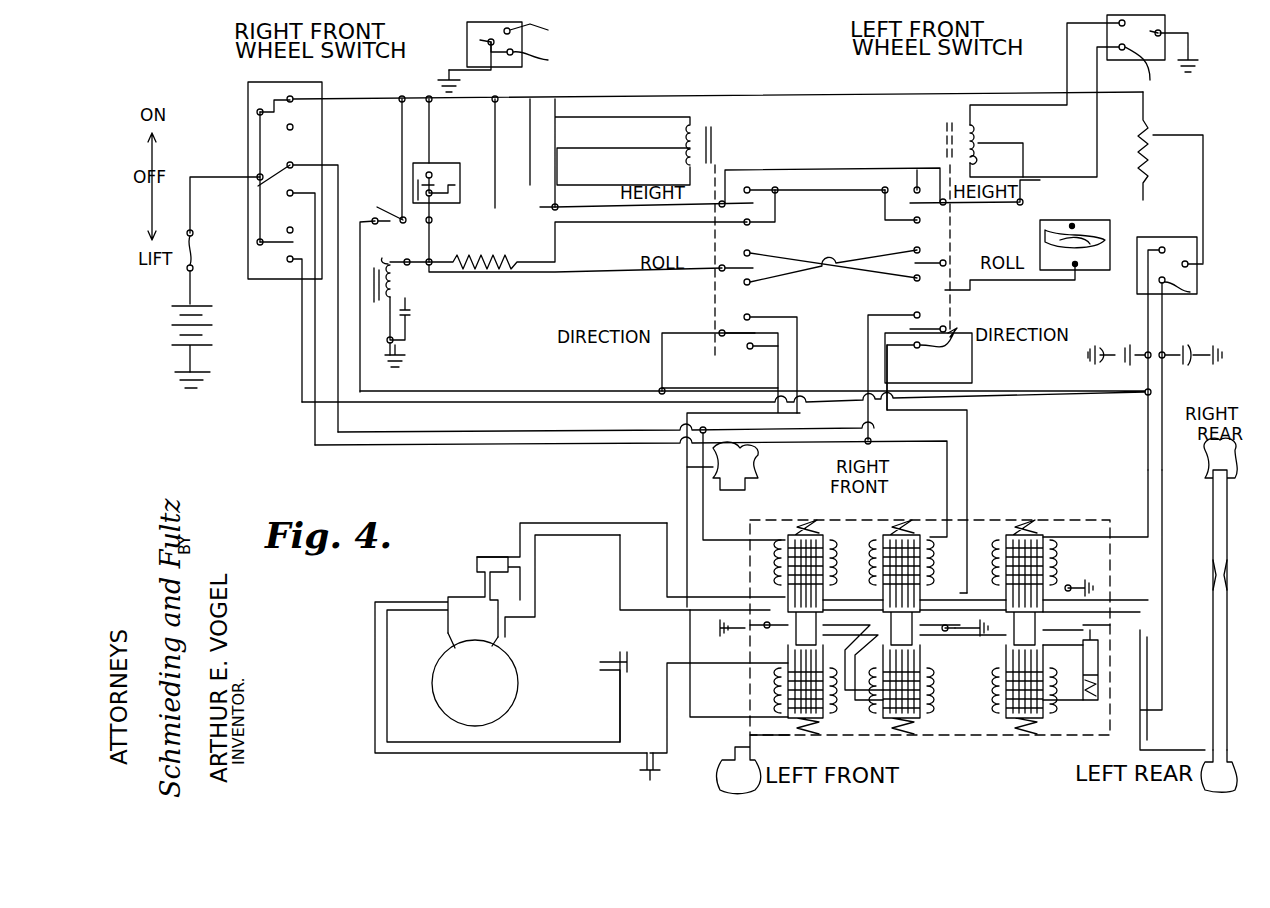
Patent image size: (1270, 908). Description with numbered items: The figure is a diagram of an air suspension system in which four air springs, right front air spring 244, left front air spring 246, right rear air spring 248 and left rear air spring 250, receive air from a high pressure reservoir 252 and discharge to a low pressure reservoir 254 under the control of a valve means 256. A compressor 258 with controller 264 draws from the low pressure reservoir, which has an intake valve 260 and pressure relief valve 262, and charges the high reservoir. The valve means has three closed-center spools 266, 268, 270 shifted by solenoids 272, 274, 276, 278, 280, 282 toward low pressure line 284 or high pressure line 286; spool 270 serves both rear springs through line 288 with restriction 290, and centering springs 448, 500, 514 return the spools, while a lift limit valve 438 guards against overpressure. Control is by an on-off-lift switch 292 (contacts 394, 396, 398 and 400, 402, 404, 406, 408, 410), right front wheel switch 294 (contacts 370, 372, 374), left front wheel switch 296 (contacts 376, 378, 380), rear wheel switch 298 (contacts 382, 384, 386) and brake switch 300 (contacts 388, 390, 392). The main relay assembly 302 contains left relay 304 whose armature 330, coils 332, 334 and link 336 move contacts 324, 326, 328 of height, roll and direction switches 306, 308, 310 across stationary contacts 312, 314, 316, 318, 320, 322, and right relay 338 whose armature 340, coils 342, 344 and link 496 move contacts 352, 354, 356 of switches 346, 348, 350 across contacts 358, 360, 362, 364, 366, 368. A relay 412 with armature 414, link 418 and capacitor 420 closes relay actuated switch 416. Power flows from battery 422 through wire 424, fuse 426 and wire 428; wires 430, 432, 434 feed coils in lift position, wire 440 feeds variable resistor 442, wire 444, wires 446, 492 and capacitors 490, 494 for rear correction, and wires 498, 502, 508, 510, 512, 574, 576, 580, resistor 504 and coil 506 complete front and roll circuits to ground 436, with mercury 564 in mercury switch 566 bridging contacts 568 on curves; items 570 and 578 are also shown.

The right front air spring 244 is at (683, 468).
The left front air spring 246 is at (725, 780).
The right rear air spring 248 is at (1225, 470).
The left rear air spring 250 is at (1232, 755).
The high pressure reservoir 252 is at (580, 523).
The low pressure reservoir 254 is at (640, 705).
The valve means 256 is at (1046, 508).
The compressor 258 is at (420, 668).
The intake valve 260 is at (608, 675).
The pressure relief valve 262 is at (647, 765).
The controller 264 is at (477, 565).
The spool 266 is at (845, 533).
The spool 268 is at (963, 525).
The spool 270 is at (1047, 540).
The solenoid coil 272 is at (785, 545).
The solenoid coil 274 is at (760, 705).
The solenoid coil 276 is at (870, 545).
The solenoid coil 278 is at (940, 660).
The solenoid coil 280 is at (1060, 530).
The solenoid coil 282 is at (1005, 715).
The low pressure return line 284 is at (722, 663).
The high pressure line 286 is at (708, 595).
The rear line 288 is at (1128, 615).
The restriction 290 is at (1228, 588).
The on-off-lift switch 292 is at (238, 93).
The right front wheel switch 294 is at (457, 36).
The left front wheel switch 296 is at (1170, 26).
The rear wheel switch 298 is at (1208, 283).
The hydraulic brake switch 300 is at (436, 156).
The main relay assembly 302 is at (920, 90).
The left relay 304 is at (932, 121).
The left height switch 306 is at (868, 199).
The left roll switch 308 is at (955, 274).
The left direction switch 310 is at (960, 335).
The stationary contact 312 is at (915, 188).
The stationary contact 314 is at (917, 225).
The stationary contact 316 is at (832, 260).
The stationary contact 318 is at (912, 289).
The stationary contact 320 is at (890, 315).
The stationary contact 322 is at (895, 343).
The movable contact 324 is at (945, 220).
The movable contact 326 is at (950, 285).
The movable contact 328 is at (928, 358).
The armature 330 is at (935, 148).
The upper coil 332 is at (980, 130).
The lower coil 334 is at (978, 156).
The actuating link 336 is at (950, 250).
The right relay 338 is at (735, 105).
The armature 340 is at (745, 148).
The upper coil 342 is at (680, 135).
The lower coil 344 is at (680, 165).
The right height switch 346 is at (790, 217).
The right roll switch 348 is at (706, 280).
The right direction switch 350 is at (704, 332).
The movable contact 352 is at (720, 211).
The movable contact 354 is at (720, 288).
The movable contact 356 is at (740, 340).
The stationary contact 358 is at (750, 190).
The stationary contact 360 is at (744, 224).
The stationary contact 362 is at (745, 250).
The stationary contact 364 is at (819, 297).
The stationary contact 366 is at (750, 310).
The stationary contact 368 is at (752, 356).
The movable contact 370 is at (470, 70).
The upper stationary contact 372 is at (548, 30).
The lower stationary contact 374 is at (548, 60).
The movable contact 376 is at (1148, 80).
The upper stationary contact 378 is at (1118, 23).
The lower stationary contact 380 is at (1138, 45).
The movable contact 382 is at (1190, 292).
The upper stationary contact 384 is at (1175, 245).
The lower stationary contact 386 is at (1165, 315).
The movable contact 388 is at (455, 192).
The stationary contact 390 is at (435, 173).
The stationary contact 392 is at (436, 222).
The movable contact 394 is at (258, 103).
The movable contact 396 is at (258, 192).
The movable contact 398 is at (285, 270).
The stationary contact 400 is at (297, 97).
The stationary contact 402 is at (295, 127).
The stationary contact 404 is at (295, 163).
The stationary contact 406 is at (295, 192).
The stationary contact 408 is at (288, 232).
The stationary contact 410 is at (268, 252).
The relay 412 is at (410, 300).
The armature 414 is at (375, 290).
The relay actuated switch 416 is at (390, 212).
The actuator link 418 is at (382, 265).
The capacitor 420 is at (413, 335).
The battery 422 is at (182, 326).
The wire 424 is at (190, 290).
The fuse 426 is at (193, 252).
The wire 428 is at (205, 177).
The wire 430 is at (415, 412).
The wire 432 is at (332, 440).
The wire 434 is at (430, 445).
The ground 436 is at (182, 370).
The lift limit valve 438 is at (1120, 688).
The wire 440 is at (620, 92).
The variable resistor 442 is at (1168, 138).
The wire 444 is at (1200, 208).
The wire 446 is at (1148, 410).
The springs 448 is at (1012, 518).
The capacitor 490 is at (1110, 350).
The wire 492 is at (1148, 470).
The capacitor 494 is at (1190, 372).
The actuator link 496 is at (718, 168).
The wire 498 is at (797, 360).
The spring 500 is at (790, 715).
The wire 502 is at (540, 237).
The variable resistor 504 is at (551, 259).
The coil of relay 412 506 is at (401, 290).
The wire 508 is at (532, 128).
The wire 510 is at (685, 480).
The wire 512 is at (432, 261).
The spring 514 is at (943, 533).
The blob of mercury 564 is at (1078, 268).
The mercury switch 566 is at (1080, 220).
The contacts 568 is at (1106, 236).
The lead 570 is at (1045, 225).
The wire 574 is at (1060, 300).
The wire 576 is at (870, 258).
The lead 578 is at (805, 262).
The wire 580 is at (866, 440).